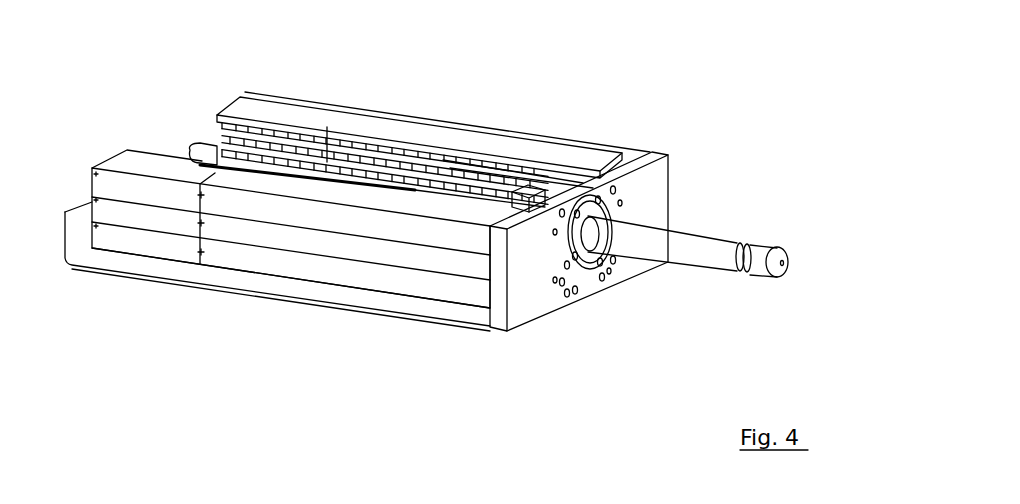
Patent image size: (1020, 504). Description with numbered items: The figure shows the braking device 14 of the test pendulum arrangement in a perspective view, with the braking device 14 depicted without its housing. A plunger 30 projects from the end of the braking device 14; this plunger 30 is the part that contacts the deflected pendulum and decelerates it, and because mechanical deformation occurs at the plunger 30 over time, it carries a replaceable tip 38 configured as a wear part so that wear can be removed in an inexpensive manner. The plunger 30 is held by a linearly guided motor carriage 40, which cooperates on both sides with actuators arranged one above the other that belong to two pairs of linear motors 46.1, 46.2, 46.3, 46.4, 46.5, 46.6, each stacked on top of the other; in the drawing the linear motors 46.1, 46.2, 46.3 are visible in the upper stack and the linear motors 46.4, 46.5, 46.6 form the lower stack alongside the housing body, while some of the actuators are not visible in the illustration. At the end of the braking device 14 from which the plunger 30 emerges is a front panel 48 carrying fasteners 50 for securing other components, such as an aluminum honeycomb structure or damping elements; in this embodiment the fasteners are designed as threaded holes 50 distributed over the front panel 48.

The braking device 14 is at (641, 118).
The plunger 30 is at (692, 242).
The replaceable tip 38 is at (772, 258).
The motor carriage 40 is at (527, 187).
The linear motor 46.1 is at (270, 110).
The linear motor 46.2 is at (397, 162).
The linear motor 46.3 is at (496, 180).
The linear motor 46.4 is at (277, 202).
The linear motor 46.5 is at (342, 240).
The linear motor 46.6 is at (396, 275).
The front panel 48 is at (517, 316).
The threaded holes 50 is at (580, 293).